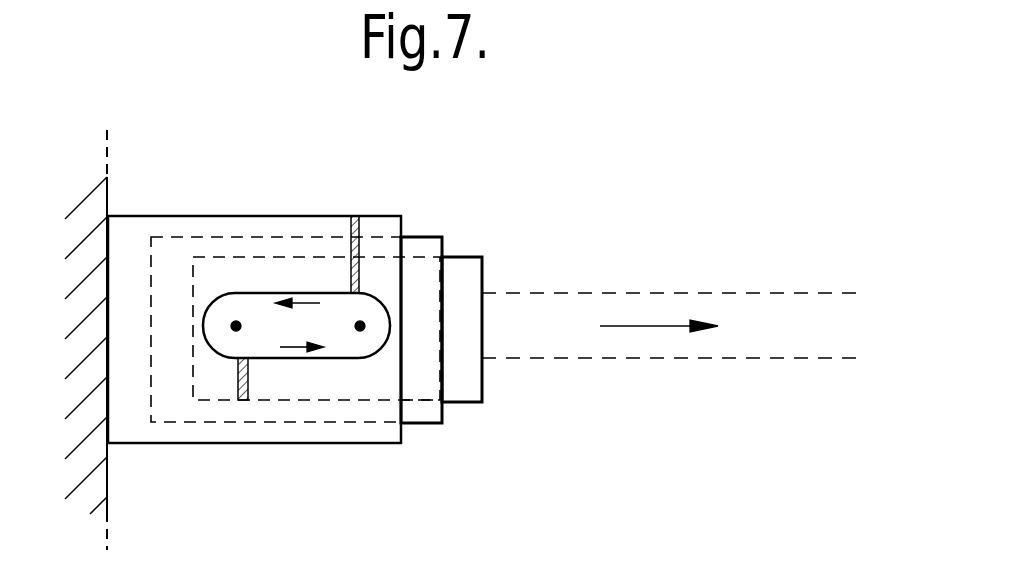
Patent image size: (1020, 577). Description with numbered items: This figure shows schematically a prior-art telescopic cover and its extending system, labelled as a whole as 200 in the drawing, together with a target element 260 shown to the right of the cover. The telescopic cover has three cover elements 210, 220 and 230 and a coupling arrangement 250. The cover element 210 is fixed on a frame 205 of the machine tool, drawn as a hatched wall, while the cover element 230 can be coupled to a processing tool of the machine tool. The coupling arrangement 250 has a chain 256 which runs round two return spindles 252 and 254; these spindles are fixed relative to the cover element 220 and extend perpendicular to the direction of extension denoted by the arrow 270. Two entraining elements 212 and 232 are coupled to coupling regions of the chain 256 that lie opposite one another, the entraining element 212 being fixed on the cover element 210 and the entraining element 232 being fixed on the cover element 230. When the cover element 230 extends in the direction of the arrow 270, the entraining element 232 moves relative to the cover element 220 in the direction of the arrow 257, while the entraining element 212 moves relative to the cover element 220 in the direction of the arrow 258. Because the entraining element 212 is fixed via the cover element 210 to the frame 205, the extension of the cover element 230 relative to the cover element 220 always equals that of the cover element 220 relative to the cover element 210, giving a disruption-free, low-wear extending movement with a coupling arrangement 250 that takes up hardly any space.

The optical sensor arrangement 200 is at (318, 203).
The frame 205 is at (110, 188).
The cover element 210 is at (150, 443).
The entraining element 212 is at (373, 216).
The cover element 220 is at (210, 422).
The cover element 230 is at (355, 400).
The entraining element 232 is at (256, 370).
The coupling arrangement 250 is at (383, 285).
The return spindle 252 is at (236, 326).
The return spindle 254 is at (360, 326).
The chain 256 is at (295, 360).
The arrow 257 is at (298, 361).
The arrow 258 is at (308, 298).
The target object 260 is at (798, 290).
The arrow 270 is at (645, 326).